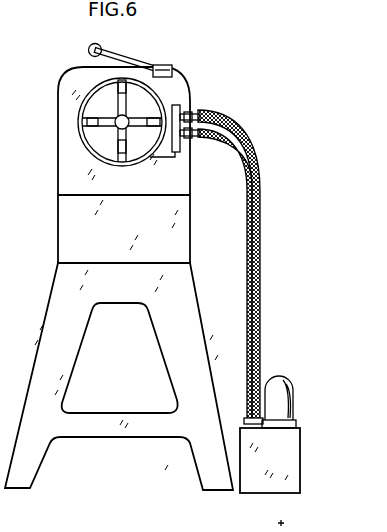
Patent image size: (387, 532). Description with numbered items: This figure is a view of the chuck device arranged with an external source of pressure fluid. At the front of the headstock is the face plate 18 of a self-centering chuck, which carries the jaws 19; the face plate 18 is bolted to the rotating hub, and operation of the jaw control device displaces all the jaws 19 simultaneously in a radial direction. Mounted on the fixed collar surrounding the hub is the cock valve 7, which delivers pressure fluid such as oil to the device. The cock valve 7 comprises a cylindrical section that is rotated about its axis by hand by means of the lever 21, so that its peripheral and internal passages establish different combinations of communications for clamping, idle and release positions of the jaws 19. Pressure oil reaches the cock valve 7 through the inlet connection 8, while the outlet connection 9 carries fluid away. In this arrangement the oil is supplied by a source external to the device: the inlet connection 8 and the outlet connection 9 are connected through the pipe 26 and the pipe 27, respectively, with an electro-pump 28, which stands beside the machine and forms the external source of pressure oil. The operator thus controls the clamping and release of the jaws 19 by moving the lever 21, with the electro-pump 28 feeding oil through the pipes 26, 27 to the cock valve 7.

The cock valve 7 is at (166, 71).
The inlet connection 8 is at (197, 136).
The outlet connection 9 is at (198, 113).
The face plate 18 is at (100, 141).
The jaws 19 is at (85, 123).
The lever 21 is at (88, 51).
The pipe 26 is at (249, 162).
The pipe 27 is at (253, 142).
The electro-pump 28 is at (287, 447).